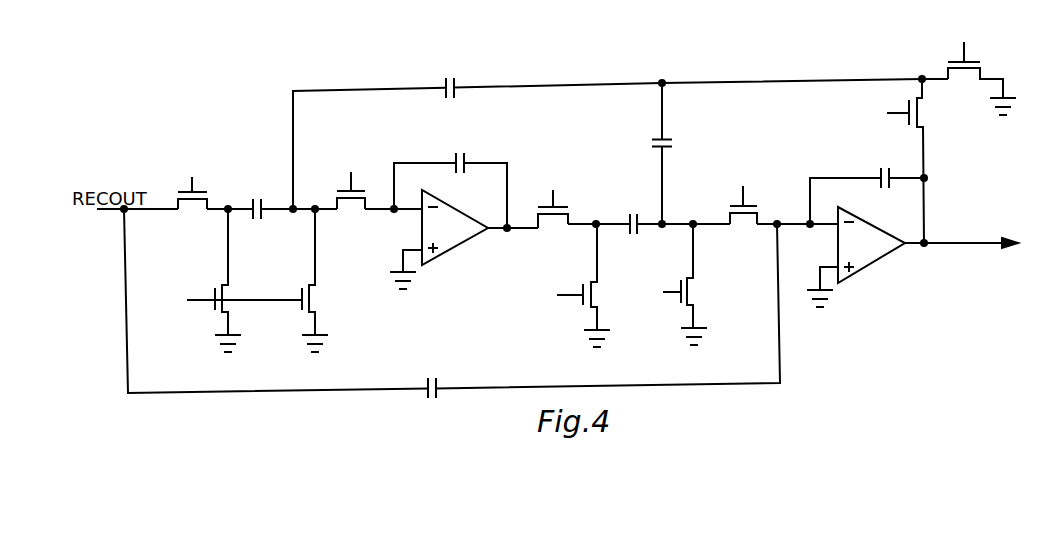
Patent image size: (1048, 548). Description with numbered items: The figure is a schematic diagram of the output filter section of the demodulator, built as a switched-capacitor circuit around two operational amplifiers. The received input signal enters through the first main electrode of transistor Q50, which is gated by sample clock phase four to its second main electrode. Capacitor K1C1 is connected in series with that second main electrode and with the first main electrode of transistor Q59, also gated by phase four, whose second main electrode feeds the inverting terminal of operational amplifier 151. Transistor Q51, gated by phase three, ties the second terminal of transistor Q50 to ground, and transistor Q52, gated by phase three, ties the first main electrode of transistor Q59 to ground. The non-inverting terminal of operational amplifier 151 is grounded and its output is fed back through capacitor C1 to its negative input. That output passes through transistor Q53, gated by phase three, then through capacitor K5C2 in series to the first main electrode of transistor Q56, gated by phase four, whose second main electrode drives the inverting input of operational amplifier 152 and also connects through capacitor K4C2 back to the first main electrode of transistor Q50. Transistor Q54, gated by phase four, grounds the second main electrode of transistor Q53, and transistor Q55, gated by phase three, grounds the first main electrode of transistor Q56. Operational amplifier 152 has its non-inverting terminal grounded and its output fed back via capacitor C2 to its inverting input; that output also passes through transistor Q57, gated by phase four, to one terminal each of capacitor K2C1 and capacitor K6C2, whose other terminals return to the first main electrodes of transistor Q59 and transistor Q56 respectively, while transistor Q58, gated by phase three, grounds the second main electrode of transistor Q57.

The operational amplifier 151 is at (464, 210).
The operational amplifier 152 is at (657, 164).
The transistor Q50 is at (194, 195).
The transistor Q51 is at (200, 280).
The transistor Q52 is at (271, 280).
The transistor Q53 is at (573, 196).
The transistor Q54 is at (570, 285).
The transistor Q55 is at (673, 284).
The transistor Q56 is at (727, 193).
The transistor Q57 is at (893, 161).
The transistor Q58 is at (985, 68).
The transistor Q59 is at (335, 181).
The capacitor C1 is at (450, 178).
The capacitor C2 is at (867, 183).
The capacitor K1C1 is at (261, 194).
The capacitor K2C1 is at (453, 73).
The capacitor K4C2 is at (436, 374).
The capacitor K5C2 is at (641, 235).
The capacitor K6C2 is at (689, 153).